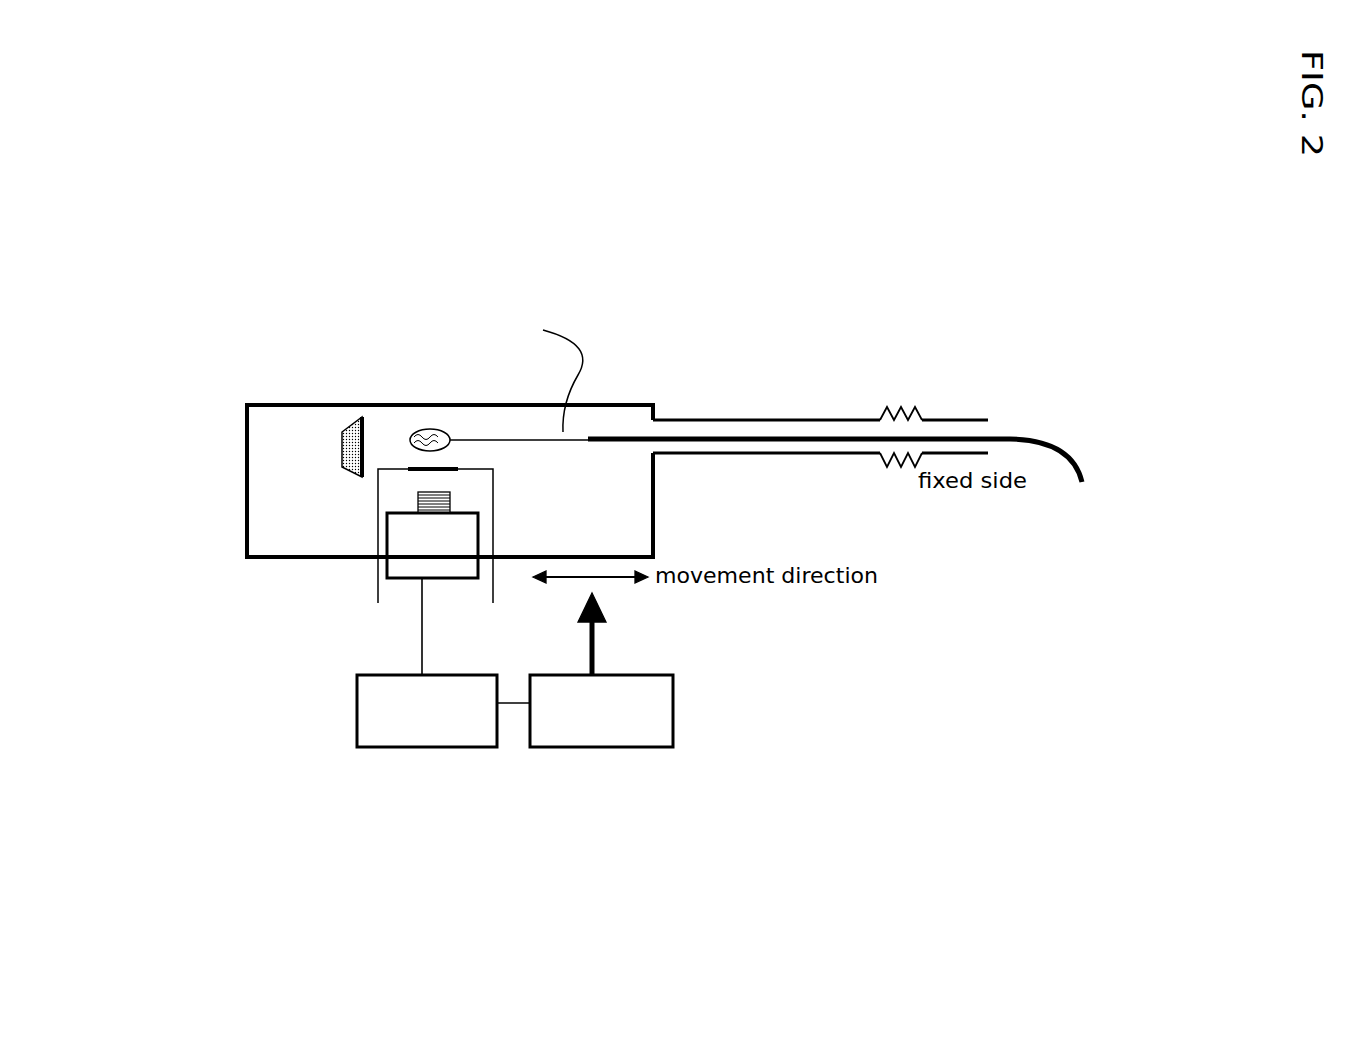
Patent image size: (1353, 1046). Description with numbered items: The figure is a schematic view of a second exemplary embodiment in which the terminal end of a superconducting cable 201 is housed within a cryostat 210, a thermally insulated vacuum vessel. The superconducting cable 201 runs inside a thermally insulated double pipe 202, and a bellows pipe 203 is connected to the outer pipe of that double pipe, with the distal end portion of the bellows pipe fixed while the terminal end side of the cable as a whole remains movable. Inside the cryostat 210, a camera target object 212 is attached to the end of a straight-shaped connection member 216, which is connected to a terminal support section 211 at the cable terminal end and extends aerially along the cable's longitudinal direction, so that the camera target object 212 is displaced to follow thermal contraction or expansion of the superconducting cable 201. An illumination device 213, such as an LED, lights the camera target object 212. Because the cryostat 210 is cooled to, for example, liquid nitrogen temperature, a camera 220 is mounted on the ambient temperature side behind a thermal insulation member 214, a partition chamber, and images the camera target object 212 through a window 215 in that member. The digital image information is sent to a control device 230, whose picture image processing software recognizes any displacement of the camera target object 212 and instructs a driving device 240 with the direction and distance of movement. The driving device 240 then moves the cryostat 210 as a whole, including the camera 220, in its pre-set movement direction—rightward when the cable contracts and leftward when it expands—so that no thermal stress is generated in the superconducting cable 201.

The superconducting cable 201 is at (1034, 459).
The thermally insulated double pipe 202 is at (820, 394).
The bellows pipe 203 is at (900, 385).
The cryostat 210 is at (450, 454).
The terminal support section 211 is at (503, 361).
The camera target object 212 is at (394, 422).
The illumination device 213 is at (316, 453).
The thermal insulation member 214 is at (493, 525).
The window 215 is at (410, 483).
The connection member 216 is at (519, 429).
The camera 220 is at (292, 693).
The control device 230 is at (387, 795).
The driving device 240 is at (610, 750).